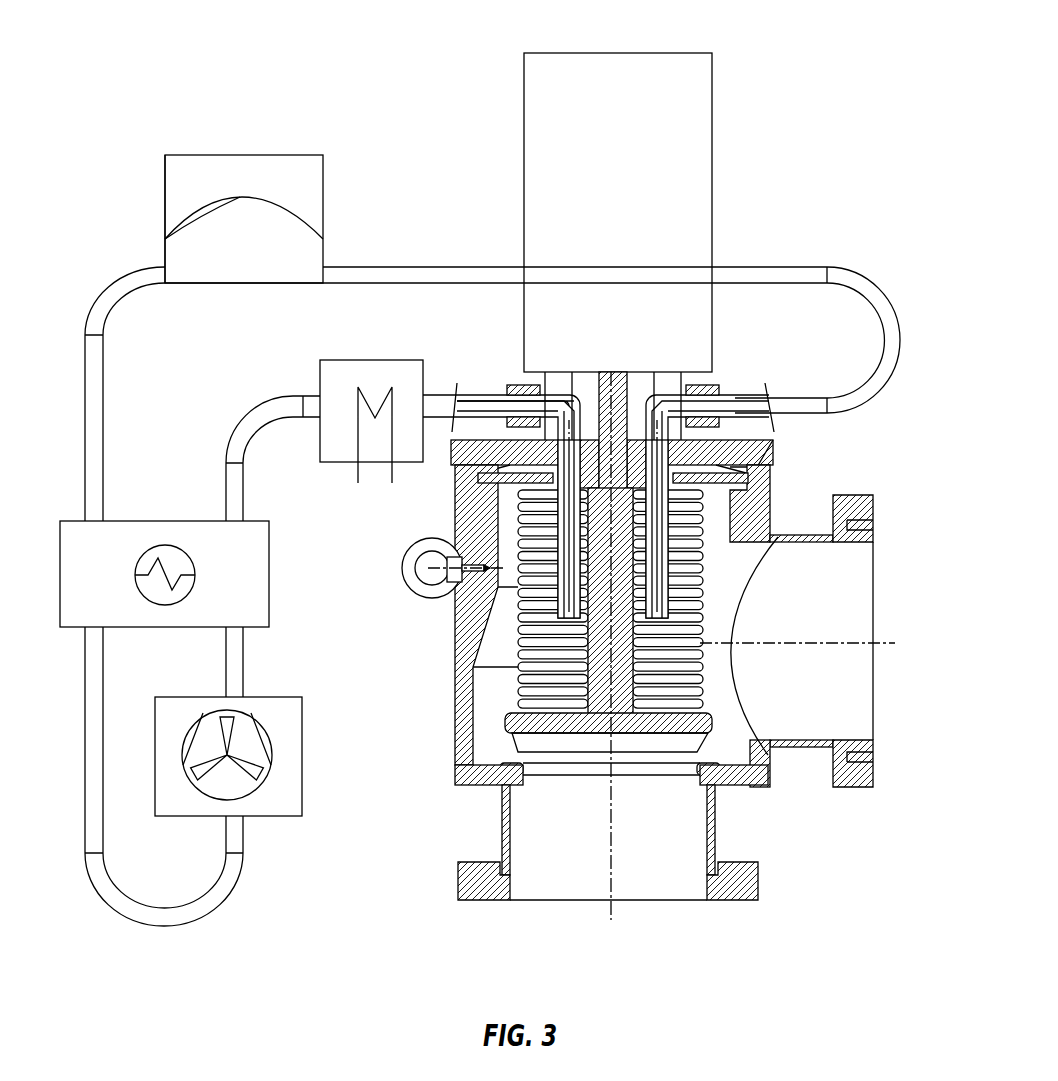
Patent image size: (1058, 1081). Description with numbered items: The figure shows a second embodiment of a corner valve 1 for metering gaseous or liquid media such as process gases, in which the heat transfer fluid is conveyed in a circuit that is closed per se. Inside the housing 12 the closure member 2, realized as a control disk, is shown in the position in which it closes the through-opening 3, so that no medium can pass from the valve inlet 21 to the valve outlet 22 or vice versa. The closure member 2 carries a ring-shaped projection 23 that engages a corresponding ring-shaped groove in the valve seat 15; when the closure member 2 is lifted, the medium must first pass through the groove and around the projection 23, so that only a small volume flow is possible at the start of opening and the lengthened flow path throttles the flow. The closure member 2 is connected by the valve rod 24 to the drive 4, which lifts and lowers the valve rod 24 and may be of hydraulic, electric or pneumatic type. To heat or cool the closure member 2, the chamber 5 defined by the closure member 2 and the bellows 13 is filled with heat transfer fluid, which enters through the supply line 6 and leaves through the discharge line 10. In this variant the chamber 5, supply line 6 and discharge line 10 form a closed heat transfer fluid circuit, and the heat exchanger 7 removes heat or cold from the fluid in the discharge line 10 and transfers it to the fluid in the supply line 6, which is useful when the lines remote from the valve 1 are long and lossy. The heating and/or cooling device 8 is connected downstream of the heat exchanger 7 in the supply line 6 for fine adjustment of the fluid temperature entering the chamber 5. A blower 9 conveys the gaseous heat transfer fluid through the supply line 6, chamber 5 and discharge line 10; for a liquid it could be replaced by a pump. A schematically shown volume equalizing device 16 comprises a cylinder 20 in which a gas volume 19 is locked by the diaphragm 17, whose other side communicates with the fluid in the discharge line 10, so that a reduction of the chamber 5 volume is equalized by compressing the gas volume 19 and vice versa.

The valve 1 is at (836, 446).
The closure member 2 is at (583, 725).
The through-opening 3 is at (595, 780).
The drive 4 is at (700, 160).
The chamber 5 is at (695, 615).
The supply line 6 is at (275, 408).
The heat exchanger 7 is at (250, 605).
The heating and/or cooling device 8 is at (410, 378).
The blower 9 is at (283, 800).
The discharge line 10 is at (738, 270).
The housing 12 is at (458, 688).
The bellows 13 is at (735, 485).
The valve seat 15 is at (507, 767).
The volume equalizing device 16 is at (300, 168).
The diaphragm 17 is at (184, 222).
The gas volume 19 is at (236, 182).
The cylinder 20 is at (165, 168).
The valve inlet 21 is at (636, 888).
The valve outlet 22 is at (813, 570).
The projection 23 is at (510, 733).
The valve rod 24 is at (600, 582).